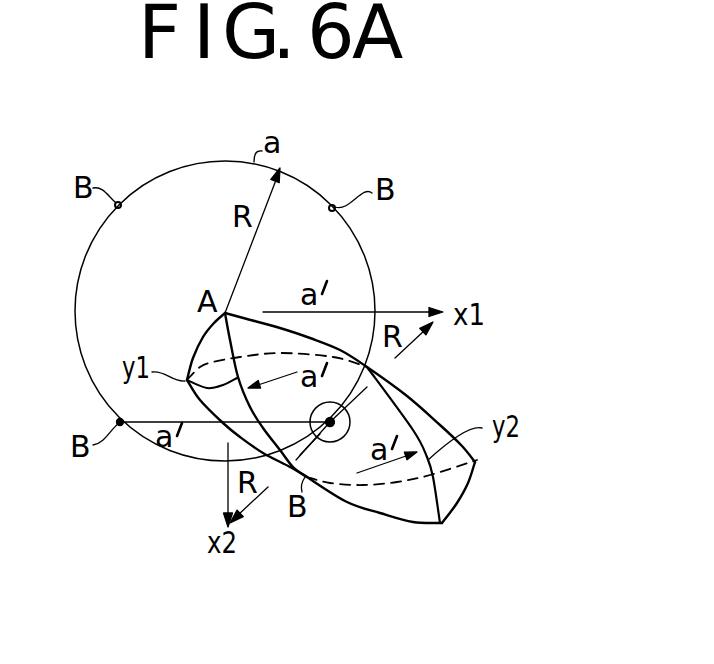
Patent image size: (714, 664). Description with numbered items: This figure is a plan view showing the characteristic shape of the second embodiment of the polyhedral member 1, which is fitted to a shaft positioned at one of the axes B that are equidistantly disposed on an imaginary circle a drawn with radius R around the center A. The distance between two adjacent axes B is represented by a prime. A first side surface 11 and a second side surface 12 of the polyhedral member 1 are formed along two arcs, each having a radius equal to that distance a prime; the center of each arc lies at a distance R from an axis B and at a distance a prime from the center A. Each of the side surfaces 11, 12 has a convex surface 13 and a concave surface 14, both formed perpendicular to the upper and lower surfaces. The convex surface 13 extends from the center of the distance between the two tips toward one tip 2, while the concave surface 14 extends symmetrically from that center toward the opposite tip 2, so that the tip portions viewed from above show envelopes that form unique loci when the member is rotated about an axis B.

The polyhedral member 1 is at (382, 525).
The tip 2 is at (200, 333).
The first side surface 11 is at (240, 430).
The second side surface 12 is at (412, 400).
The convex surface 13 is at (210, 410).
The concave surface 14 is at (210, 365).